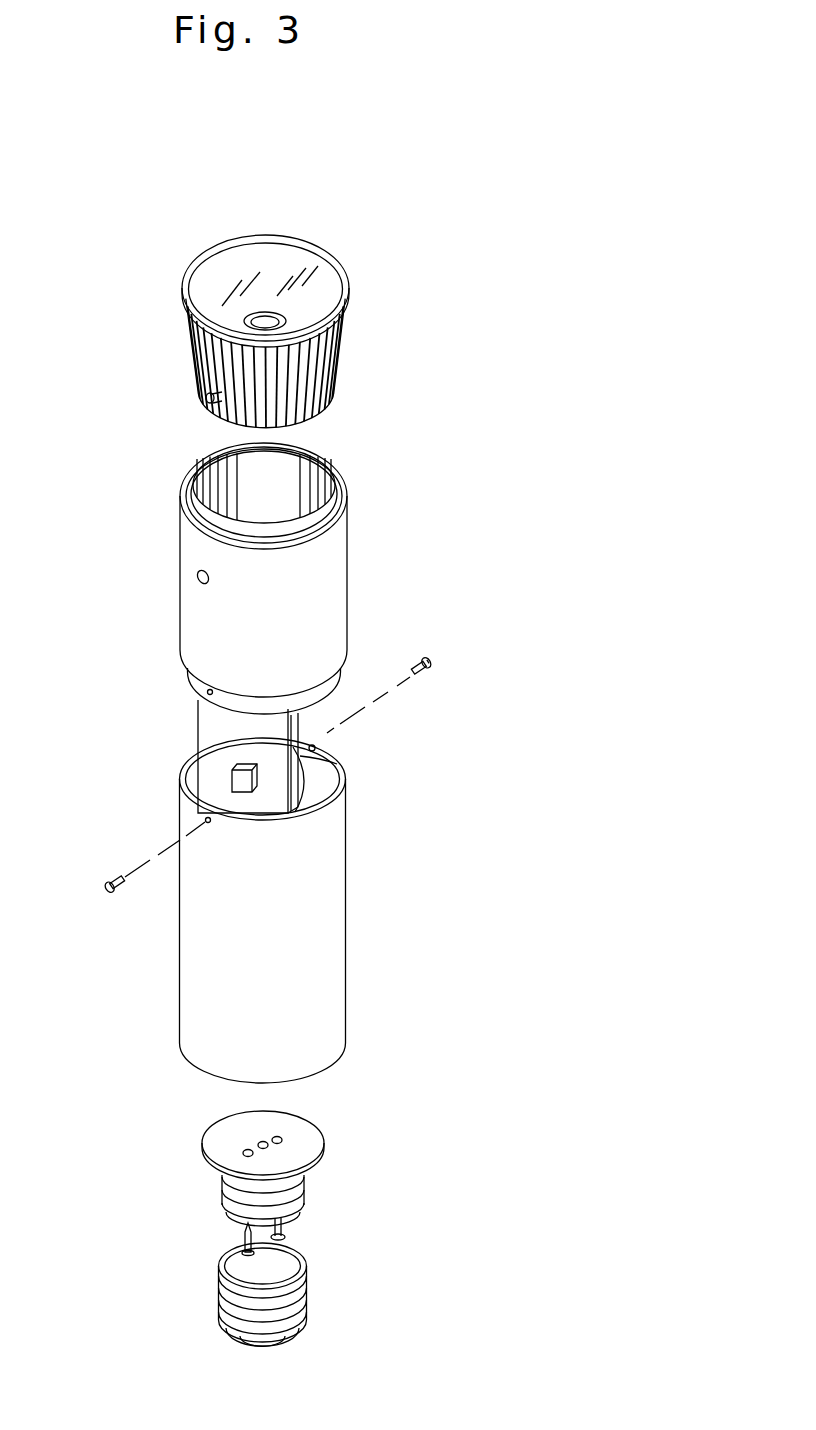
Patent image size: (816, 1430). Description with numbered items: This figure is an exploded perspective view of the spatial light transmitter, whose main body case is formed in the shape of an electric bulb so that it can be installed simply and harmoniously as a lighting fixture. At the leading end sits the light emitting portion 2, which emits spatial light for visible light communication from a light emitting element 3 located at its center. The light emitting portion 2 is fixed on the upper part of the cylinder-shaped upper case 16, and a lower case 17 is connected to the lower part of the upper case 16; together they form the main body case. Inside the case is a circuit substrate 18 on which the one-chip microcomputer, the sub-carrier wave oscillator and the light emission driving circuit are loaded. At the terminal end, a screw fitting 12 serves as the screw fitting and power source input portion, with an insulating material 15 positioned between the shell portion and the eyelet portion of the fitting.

The light emitting portion 2 is at (340, 330).
The light emitting element 3 is at (267, 317).
The screw fitting 12 is at (307, 1305).
The insulating material 15 is at (303, 1182).
The upper case 16 is at (332, 575).
The lower case 17 is at (328, 879).
The circuit substrate 18 is at (218, 732).